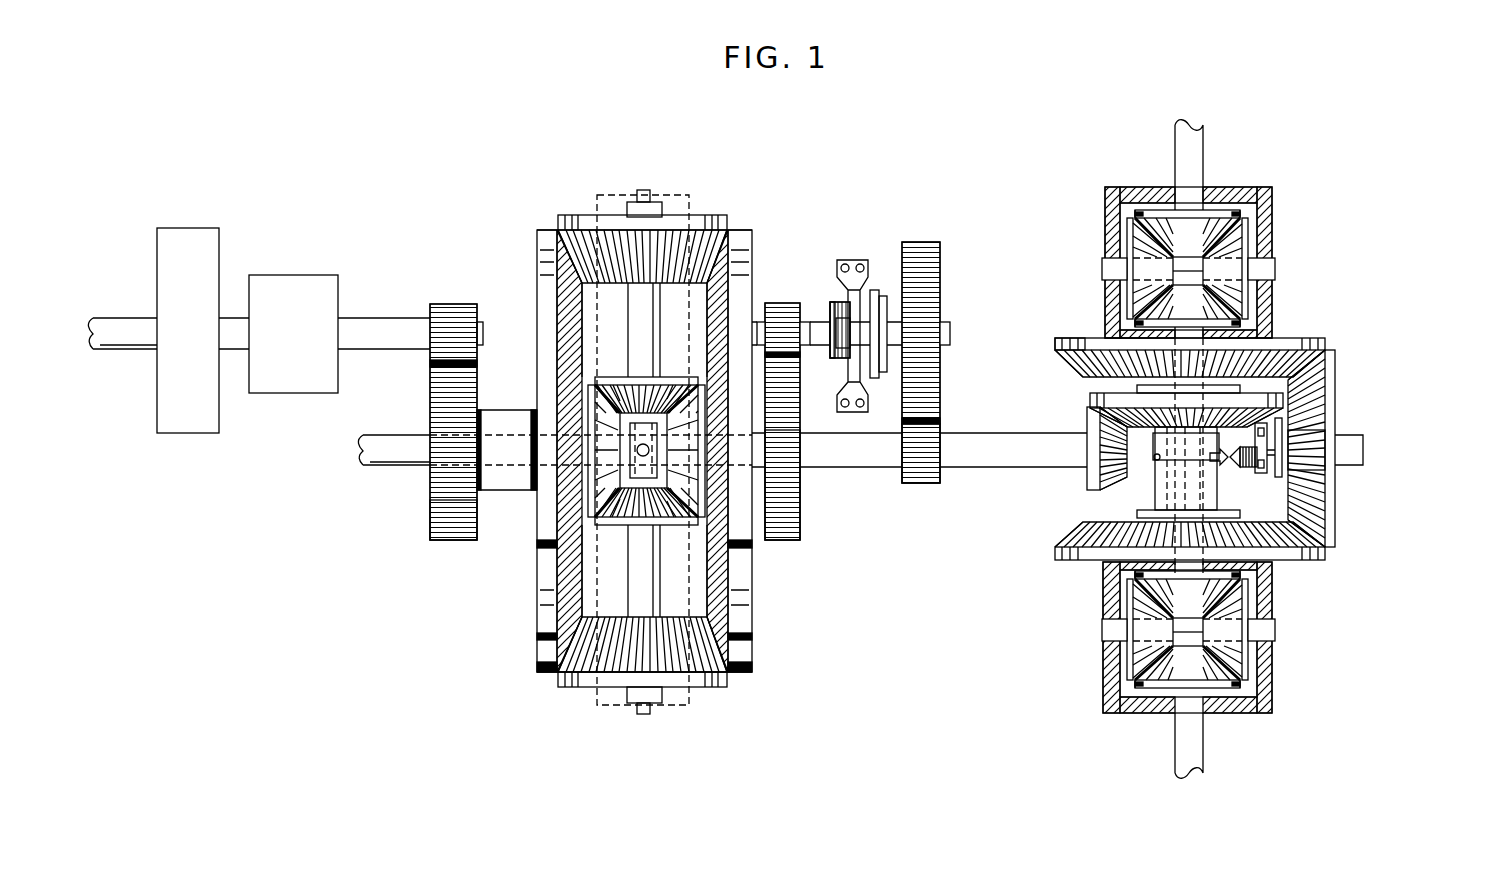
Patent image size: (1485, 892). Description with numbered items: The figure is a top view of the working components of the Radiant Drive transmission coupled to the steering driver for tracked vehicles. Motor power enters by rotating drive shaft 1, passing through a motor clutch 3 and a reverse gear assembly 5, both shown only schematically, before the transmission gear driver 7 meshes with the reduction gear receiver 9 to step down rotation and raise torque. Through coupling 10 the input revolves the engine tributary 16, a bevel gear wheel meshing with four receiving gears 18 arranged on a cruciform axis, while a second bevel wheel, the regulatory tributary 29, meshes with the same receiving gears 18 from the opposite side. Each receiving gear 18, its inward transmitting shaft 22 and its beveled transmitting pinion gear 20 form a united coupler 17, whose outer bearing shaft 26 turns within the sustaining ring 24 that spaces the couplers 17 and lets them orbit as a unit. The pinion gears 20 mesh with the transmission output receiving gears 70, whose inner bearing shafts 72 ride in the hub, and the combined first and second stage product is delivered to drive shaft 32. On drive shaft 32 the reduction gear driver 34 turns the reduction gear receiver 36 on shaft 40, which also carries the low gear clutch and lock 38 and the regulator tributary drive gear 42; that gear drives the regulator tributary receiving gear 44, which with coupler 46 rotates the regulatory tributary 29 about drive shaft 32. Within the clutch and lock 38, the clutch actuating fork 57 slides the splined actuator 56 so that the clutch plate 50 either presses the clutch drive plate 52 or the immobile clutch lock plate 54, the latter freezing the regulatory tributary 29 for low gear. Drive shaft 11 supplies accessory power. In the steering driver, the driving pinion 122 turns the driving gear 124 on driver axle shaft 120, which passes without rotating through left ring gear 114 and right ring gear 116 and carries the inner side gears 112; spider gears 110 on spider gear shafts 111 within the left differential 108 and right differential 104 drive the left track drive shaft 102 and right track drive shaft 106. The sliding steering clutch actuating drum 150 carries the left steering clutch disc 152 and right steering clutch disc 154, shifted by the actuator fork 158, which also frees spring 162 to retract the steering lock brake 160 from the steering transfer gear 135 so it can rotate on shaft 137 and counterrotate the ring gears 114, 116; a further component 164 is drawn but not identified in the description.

The drive shaft 1 is at (100, 318).
The clutch 3 is at (188, 228).
The reverse gear assembly 5 is at (297, 275).
The transmission gear driver 7 is at (453, 304).
The reduction gear receiver 9 is at (452, 543).
The coupling 10 is at (497, 491).
The drive shaft 11 is at (368, 468).
The engine tributary 16 is at (537, 635).
The coupler 17 is at (660, 213).
The receiving gears 18 is at (560, 216).
The transmitting pinion gears 20 is at (565, 340).
The transmitting shafts 22 is at (638, 340).
The sustaining ring 24 is at (607, 708).
The outer bearing shaft 26 is at (644, 190).
The regulatory tributary 29 is at (758, 675).
The drive shaft 32 is at (965, 468).
The reduction gear driver 34 is at (920, 484).
The reduction gear receiver 36 is at (935, 242).
The low gear clutch and lock 38 is at (852, 260).
The shaft 40 is at (946, 322).
The regulator tributary drive gear 42 is at (780, 303).
The regulator tributary receiving gear 44 is at (800, 510).
The coupler 46 is at (752, 548).
The clutch plate 50 is at (880, 290).
The clutch drive plate 52 is at (886, 296).
The immobile clutch lock plate 54 is at (840, 302).
The sliding clutch/lock actuator 56 is at (840, 358).
The clutch actuating fork 57 is at (832, 302).
The transmission output receiving gears 70 is at (590, 520).
The output receiving gear inner bearing shafts 72 is at (450, 438).
The left track drive shaft 102 is at (1188, 123).
The right differential 104 is at (1275, 712).
The right track drive shaft 106 is at (1188, 773).
The left track steering driver differential 108 is at (1272, 192).
The spider gears 110 is at (1140, 240).
The spider gear shafts 111 is at (1102, 269).
The side gears 112 is at (1160, 225).
The left ring gear 114 is at (1065, 345).
The right ring gear 116 is at (1062, 558).
The driver axle shaft 120 is at (1300, 345).
The driving pinion 122 is at (1090, 425).
The driving gear 124 is at (1095, 400).
The steering transfer gear 135 is at (1330, 360).
The shaft 137 is at (1360, 462).
The sliding steering clutch actuating drum 150 is at (1158, 478).
The left steering clutch disc 152 is at (1165, 385).
The right steering clutch disc 154 is at (1140, 515).
The steering clutch/brake lock actuator fork 158 is at (1248, 466).
The steering lock brake 160 is at (1265, 430).
The spring 162 is at (1281, 475).
The hub 164 is at (1300, 500).